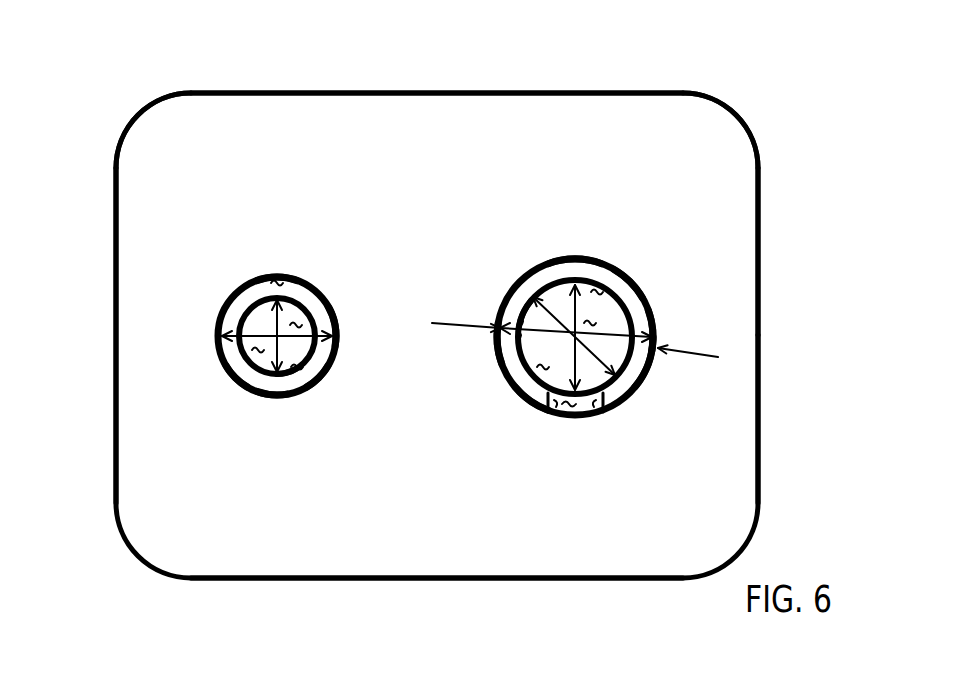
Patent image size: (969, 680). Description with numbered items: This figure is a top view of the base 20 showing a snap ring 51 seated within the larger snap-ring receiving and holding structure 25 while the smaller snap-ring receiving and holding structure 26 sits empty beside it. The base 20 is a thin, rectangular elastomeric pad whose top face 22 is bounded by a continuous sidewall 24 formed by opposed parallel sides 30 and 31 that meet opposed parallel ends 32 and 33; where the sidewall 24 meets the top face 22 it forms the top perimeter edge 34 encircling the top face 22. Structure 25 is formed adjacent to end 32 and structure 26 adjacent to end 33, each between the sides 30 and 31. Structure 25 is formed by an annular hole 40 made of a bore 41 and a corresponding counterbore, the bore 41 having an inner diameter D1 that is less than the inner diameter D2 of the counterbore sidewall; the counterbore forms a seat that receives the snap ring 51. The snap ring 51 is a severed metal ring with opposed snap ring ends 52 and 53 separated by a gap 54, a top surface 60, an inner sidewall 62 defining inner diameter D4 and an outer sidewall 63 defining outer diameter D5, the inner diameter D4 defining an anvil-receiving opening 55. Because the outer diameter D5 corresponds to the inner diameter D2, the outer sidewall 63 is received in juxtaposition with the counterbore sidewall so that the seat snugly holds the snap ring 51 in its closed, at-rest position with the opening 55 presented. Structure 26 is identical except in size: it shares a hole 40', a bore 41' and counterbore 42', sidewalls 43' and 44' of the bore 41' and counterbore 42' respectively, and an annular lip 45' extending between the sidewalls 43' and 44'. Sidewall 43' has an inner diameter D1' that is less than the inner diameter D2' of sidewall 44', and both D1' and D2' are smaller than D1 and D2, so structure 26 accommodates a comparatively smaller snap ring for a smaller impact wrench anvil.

The base 20 is at (695, 143).
The top face 22 is at (199, 128).
The sidewall 24 is at (760, 175).
The snap-ring receiving and holding structure 25 is at (528, 405).
The snap-ring receiving and holding structure 26 is at (255, 393).
The side 30 is at (277, 92).
The side 31 is at (275, 582).
The end 32 is at (758, 483).
The end 33 is at (113, 478).
The top perimeter edge 34 is at (665, 90).
The annular hole 40 is at (681, 322).
The bore 41 is at (648, 259).
The snap ring 51 is at (597, 267).
The snap ring end 52 is at (555, 418).
The snap ring end 53 is at (590, 418).
The gap 54 is at (570, 418).
The anvil-receiving opening 55 is at (523, 397).
The top surface 60 is at (655, 365).
The inner sidewall 62 is at (502, 320).
The outer sidewall 63 is at (504, 300).
The hole 40' is at (351, 299).
The bore 41' is at (214, 401).
The counterbore 42' is at (281, 241).
The sidewall 43' is at (317, 406).
The sidewall 44' is at (345, 387).
The lip 45' is at (288, 432).
The inner diameter D1 is at (555, 297).
The inner diameter D2 is at (560, 362).
The inner diameter D4 is at (530, 290).
The outer diameter D5 is at (438, 325).
The inner diameter D1' is at (316, 300).
The inner diameter D2' is at (315, 317).